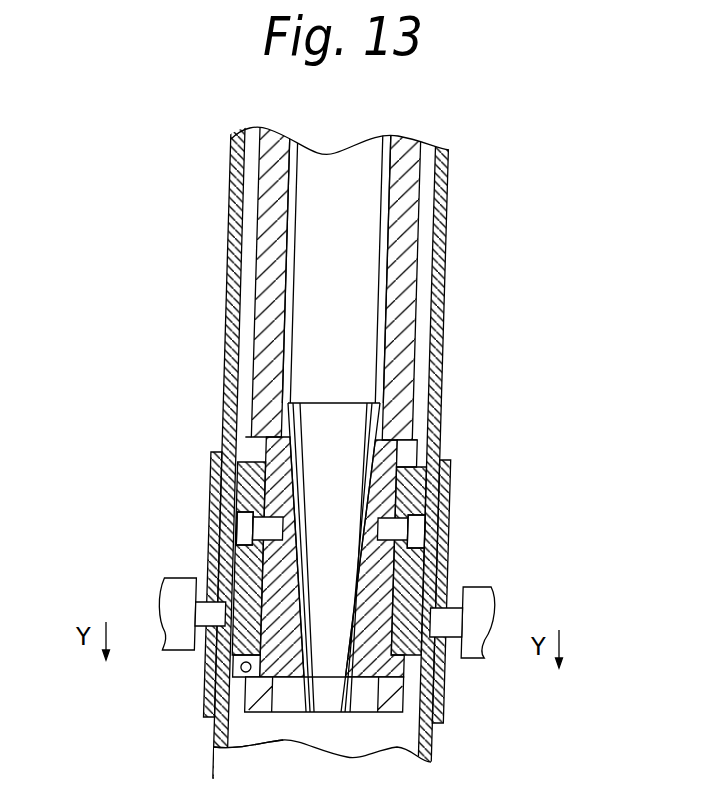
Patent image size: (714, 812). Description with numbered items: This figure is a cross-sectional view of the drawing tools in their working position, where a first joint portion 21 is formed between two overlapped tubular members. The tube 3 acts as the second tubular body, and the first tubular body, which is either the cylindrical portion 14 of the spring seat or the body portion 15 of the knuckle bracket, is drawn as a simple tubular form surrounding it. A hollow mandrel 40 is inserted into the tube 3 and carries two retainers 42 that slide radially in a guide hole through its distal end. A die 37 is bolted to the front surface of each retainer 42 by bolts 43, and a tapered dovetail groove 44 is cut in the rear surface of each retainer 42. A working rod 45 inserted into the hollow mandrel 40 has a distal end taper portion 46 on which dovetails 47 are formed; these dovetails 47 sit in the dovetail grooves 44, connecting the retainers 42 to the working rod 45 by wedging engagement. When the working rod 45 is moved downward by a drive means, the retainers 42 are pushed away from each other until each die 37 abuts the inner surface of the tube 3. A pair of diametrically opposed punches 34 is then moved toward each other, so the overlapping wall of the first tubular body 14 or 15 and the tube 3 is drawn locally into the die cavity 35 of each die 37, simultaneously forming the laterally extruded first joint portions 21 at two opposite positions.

The tube 3 is at (232, 197).
The cylindrical portion 14 is at (436, 708).
The body portion 15 is at (436, 708).
The hollow mandrel 40 is at (403, 212).
The working rod 45 is at (336, 166).
The retainer 42 is at (408, 463).
The bolt 43 is at (428, 512).
The distal end taper portion 46 is at (333, 422).
The tapered dovetail groove 44 is at (347, 606).
The dovetail 47 is at (377, 520).
The die 37 is at (207, 553).
The punch 34 is at (163, 586).
The die cavity 35 is at (228, 620).
The first joint portion 21 is at (436, 622).